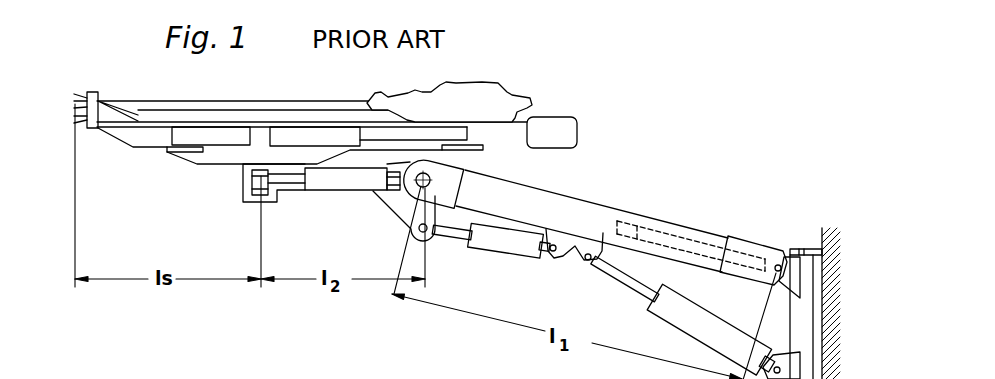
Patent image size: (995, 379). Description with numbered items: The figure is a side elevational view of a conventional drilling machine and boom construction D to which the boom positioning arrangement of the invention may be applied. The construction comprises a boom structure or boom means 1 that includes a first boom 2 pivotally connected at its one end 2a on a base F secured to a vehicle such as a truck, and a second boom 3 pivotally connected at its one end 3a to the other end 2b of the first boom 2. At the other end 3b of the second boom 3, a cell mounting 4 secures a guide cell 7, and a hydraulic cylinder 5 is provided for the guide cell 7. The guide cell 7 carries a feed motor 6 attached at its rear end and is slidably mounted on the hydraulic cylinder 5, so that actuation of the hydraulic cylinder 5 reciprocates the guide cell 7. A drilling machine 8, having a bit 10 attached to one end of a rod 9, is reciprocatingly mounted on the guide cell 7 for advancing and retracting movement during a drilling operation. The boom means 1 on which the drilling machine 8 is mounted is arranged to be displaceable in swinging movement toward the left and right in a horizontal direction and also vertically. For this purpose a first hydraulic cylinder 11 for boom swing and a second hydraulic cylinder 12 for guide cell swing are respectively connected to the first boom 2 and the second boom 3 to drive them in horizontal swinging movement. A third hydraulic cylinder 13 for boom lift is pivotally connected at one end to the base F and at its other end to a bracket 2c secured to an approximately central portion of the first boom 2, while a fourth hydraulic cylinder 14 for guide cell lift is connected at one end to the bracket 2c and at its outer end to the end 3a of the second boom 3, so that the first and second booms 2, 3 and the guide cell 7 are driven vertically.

The boom means 1 is at (410, 157).
The first boom 2 is at (539, 205).
The one end of first boom 2a is at (752, 244).
The other end of first boom 2b is at (452, 166).
The bracket 2c is at (577, 259).
The second boom 3 is at (291, 191).
The one end of second boom 3a is at (383, 197).
The other end of second boom 3b is at (250, 196).
The cell mounting 4 is at (257, 137).
The hydraulic cylinder 5 is at (188, 141).
The feed motor 6 is at (557, 122).
The guide cell 7 is at (132, 137).
The drilling machine 8 is at (505, 102).
The rod 9 is at (195, 105).
The bit 10 is at (73, 103).
The first hydraulic cylinder 11 is at (678, 228).
The second hydraulic cylinder 12 is at (322, 186).
The third hydraulic cylinder 13 is at (688, 328).
The fourth hydraulic cylinder 14 is at (520, 248).
The drilling machine and boom construction D is at (627, 147).
The base F is at (808, 296).